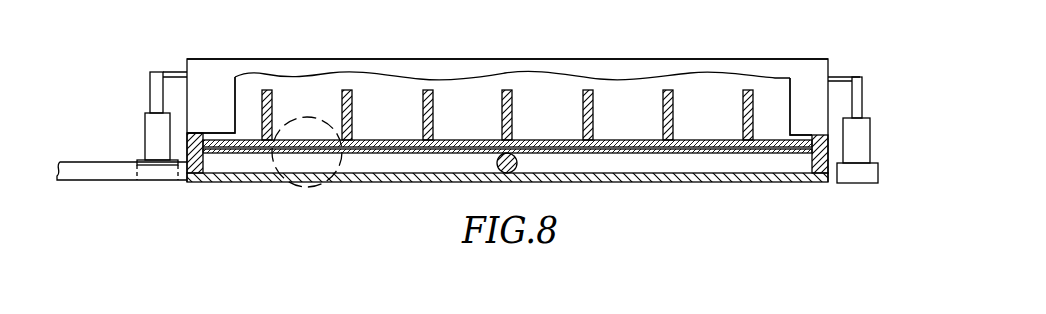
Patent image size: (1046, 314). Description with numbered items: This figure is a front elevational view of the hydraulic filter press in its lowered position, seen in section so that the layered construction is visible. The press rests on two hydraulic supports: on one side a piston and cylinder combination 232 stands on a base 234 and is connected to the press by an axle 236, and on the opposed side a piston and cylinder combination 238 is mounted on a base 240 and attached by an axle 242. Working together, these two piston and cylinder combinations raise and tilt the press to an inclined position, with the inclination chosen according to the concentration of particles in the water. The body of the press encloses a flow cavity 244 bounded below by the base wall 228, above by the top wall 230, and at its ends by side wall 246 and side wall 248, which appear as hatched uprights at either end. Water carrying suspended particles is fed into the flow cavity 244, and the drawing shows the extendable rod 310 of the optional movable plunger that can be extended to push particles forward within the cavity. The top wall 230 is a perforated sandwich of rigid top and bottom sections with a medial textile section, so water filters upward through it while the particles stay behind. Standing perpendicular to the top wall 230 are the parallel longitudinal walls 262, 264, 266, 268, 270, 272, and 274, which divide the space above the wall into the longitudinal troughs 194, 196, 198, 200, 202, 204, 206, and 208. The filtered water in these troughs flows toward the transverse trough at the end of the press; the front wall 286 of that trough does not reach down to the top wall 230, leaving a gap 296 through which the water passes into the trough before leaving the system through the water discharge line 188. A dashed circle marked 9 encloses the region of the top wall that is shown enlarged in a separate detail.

The detail circle of FIG. 9 is at (313, 118).
The water discharge line 188 is at (90, 182).
The longitudinal trough 194 is at (252, 128).
The longitudinal trough 196 is at (287, 113).
The longitudinal trough 198 is at (368, 127).
The longitudinal trough 200 is at (442, 128).
The longitudinal trough 202 is at (553, 135).
The longitudinal trough 204 is at (612, 100).
The longitudinal trough 206 is at (702, 133).
The longitudinal trough 208 is at (773, 95).
The base wall 228 is at (393, 182).
The top wall 230 is at (368, 127).
The piston and cylinder combination 232 is at (144, 125).
The base 234 is at (136, 160).
The axle 236 is at (173, 70).
The piston and cylinder combination 238 is at (870, 130).
The base 240 is at (857, 185).
The axle 242 is at (845, 75).
The flow cavity 244 is at (622, 162).
The side wall 246 is at (212, 163).
The side wall 248 is at (808, 165).
The longitudinal wall 262 is at (268, 88).
The longitudinal wall 264 is at (343, 88).
The longitudinal wall 266 is at (427, 88).
The longitudinal wall 268 is at (508, 88).
The longitudinal wall 270 is at (586, 88).
The longitudinal wall 272 is at (668, 88).
The longitudinal wall 274 is at (748, 88).
The front wall 286 is at (200, 59).
The gap 296 is at (795, 140).
The extendable rod 310 is at (497, 163).